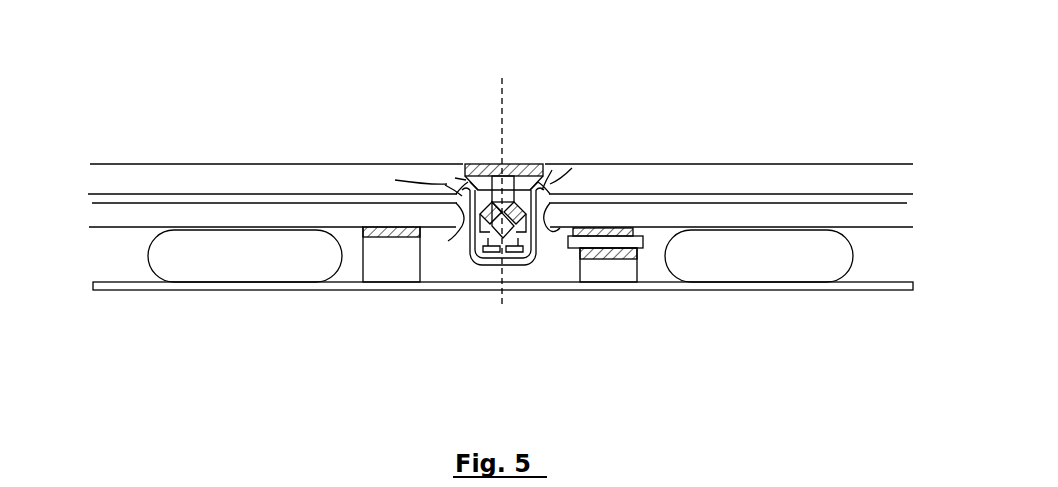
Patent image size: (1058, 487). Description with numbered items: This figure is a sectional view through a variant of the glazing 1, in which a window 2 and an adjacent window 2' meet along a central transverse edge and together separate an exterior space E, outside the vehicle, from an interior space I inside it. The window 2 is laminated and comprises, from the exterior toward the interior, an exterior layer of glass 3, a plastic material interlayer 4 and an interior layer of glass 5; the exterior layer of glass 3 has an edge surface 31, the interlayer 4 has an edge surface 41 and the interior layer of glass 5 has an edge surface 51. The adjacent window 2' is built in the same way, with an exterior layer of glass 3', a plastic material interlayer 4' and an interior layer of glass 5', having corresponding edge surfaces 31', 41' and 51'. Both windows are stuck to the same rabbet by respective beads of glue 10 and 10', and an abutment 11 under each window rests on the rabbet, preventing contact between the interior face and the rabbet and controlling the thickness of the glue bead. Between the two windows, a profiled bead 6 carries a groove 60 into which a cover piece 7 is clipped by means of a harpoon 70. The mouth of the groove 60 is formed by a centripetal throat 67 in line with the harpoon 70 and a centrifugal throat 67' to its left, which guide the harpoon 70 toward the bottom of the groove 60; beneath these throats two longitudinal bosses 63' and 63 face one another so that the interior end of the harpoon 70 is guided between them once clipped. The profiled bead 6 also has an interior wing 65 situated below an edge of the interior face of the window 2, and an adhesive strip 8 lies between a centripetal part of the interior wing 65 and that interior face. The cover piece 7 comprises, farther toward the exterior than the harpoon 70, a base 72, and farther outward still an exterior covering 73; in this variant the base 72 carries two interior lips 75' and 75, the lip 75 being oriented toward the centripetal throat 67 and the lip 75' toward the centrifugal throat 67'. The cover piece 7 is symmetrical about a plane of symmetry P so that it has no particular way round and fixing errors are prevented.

The glazing 1 is at (456, 72).
The window 2 is at (729, 174).
The adjacent window 2' is at (275, 175).
The exterior layer of glass 3 is at (752, 157).
The exterior layer of glass 3' is at (254, 157).
The plastic material interlayer 4 is at (752, 194).
The plastic material interlayer 4' is at (251, 191).
The interior layer of glass 5 is at (754, 226).
The interior layer of glass 5' is at (252, 224).
The profiled bead 6 is at (498, 333).
The cover piece 7 is at (458, 128).
The adhesive strip 8 is at (636, 232).
The bead of glue 10 is at (759, 286).
The bead of glue 10' is at (245, 286).
The abutment 11 is at (373, 272).
The edge surface 41 is at (588, 153).
The edge surface 41' is at (379, 161).
The edge surface 31 is at (578, 144).
The edge surface 31' is at (408, 160).
The edge surface 51 is at (569, 252).
The edge surface 51' is at (446, 226).
The groove 60 is at (495, 268).
The longitudinal boss 63 is at (522, 272).
The longitudinal boss 63' is at (471, 272).
The interior wing 65 is at (628, 248).
The centripetal throat 67 is at (541, 295).
The centrifugal throat 67' is at (459, 280).
The harpoon 70 is at (510, 172).
The base 72 is at (486, 172).
The exterior covering 73 is at (525, 165).
The interior lip 75 is at (565, 129).
The interior lip 75' is at (438, 149).
The plane of symmetry P is at (501, 108).
The exterior space E is at (516, 58).
The interior space I is at (510, 428).